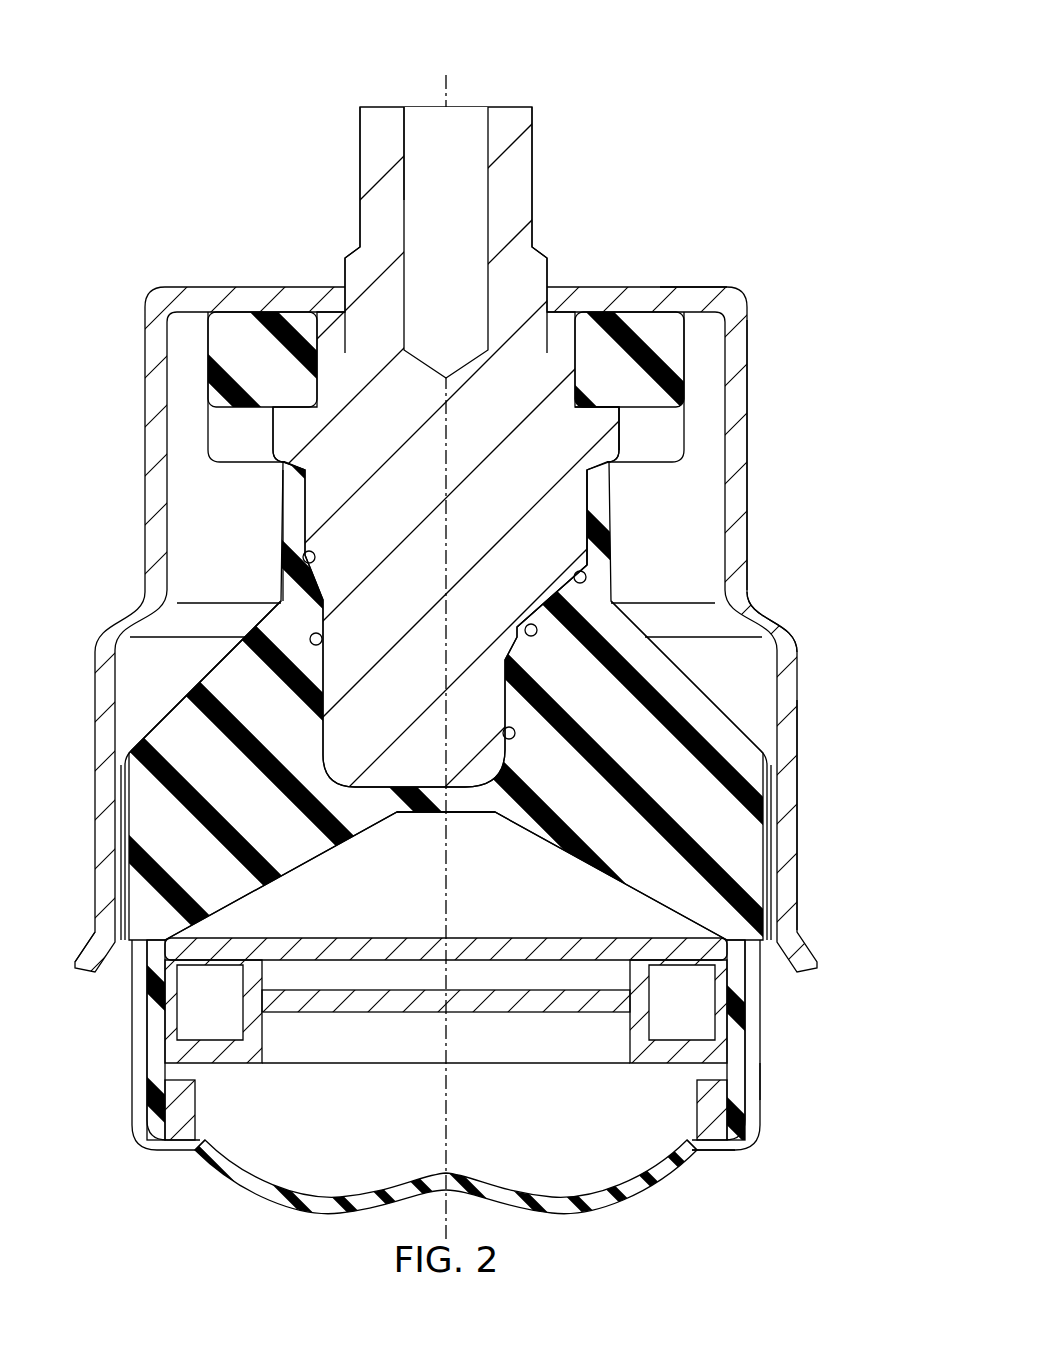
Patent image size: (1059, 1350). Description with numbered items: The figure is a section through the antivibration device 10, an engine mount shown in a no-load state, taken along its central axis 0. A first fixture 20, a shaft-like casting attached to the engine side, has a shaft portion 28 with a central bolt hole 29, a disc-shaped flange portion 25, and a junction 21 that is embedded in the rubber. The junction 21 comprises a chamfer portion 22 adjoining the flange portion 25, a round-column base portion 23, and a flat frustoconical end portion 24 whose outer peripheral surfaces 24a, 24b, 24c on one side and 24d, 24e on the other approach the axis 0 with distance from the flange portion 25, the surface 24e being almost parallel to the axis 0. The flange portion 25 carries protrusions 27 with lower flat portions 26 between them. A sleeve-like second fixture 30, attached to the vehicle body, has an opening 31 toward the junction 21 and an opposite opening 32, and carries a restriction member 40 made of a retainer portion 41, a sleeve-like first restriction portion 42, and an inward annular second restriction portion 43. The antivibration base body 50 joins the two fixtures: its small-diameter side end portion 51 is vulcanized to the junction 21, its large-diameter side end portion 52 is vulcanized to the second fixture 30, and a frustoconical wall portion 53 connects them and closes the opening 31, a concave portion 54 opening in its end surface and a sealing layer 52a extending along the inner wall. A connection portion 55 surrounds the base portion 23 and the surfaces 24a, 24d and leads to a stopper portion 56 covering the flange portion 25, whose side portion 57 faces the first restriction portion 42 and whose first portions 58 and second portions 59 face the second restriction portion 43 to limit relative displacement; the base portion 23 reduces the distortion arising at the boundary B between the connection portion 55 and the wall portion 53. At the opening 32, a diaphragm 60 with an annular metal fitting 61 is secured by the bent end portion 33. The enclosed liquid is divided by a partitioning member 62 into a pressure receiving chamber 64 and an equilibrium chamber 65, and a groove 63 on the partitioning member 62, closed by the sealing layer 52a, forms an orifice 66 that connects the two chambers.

The antivibration device 10 is at (778, 86).
The first fixture 20 is at (580, 214).
The junction 21 is at (603, 578).
The chamfer portion 22 is at (600, 462).
The base portion 23 is at (565, 507).
The end portion 24 is at (490, 695).
The outer peripheral surface 24a is at (574, 577).
The outer peripheral surface 24b is at (526, 628).
The outer peripheral surface 24c is at (503, 733).
The outer peripheral surface 24d is at (316, 557).
The outer peripheral surface 24e is at (322, 640).
The flange portion 25 is at (258, 425).
The flat portion 26 is at (280, 397).
The protrusion 27 is at (622, 400).
The shaft portion 28 is at (375, 225).
The bolt hole 29 is at (404, 127).
The axis 0 is at (446, 86).
The boundary B is at (588, 605).
The second fixture 30 is at (762, 1030).
The opening 31 is at (770, 742).
The opening 32 is at (758, 1080).
The end portion 33 is at (730, 1157).
The restriction member 40 is at (802, 470).
The retainer portion 41 is at (790, 828).
The first restriction portion 42 is at (735, 357).
The second restriction portion 43 is at (668, 300).
The antivibration base body 50 is at (176, 678).
The small-diameter side end portion 51 is at (300, 600).
The large-diameter side end portion 52 is at (150, 925).
The sealing layer 52a is at (155, 1030).
The wall portion 53 is at (152, 737).
The concave portion 54 is at (322, 865).
The connection portion 55 is at (292, 500).
The stopper portion 56 is at (266, 272).
The side portion 57 is at (220, 412).
The first portion 58 is at (236, 322).
The second portion 59 is at (655, 325).
The diaphragm 60 is at (235, 1163).
The metal fitting 61 is at (188, 1100).
The partitioning member 62 is at (258, 945).
The groove 63 is at (260, 985).
The pressure receiving chamber 64 is at (470, 905).
The equilibrium chamber 65 is at (480, 1105).
The orifice 66 is at (680, 1020).